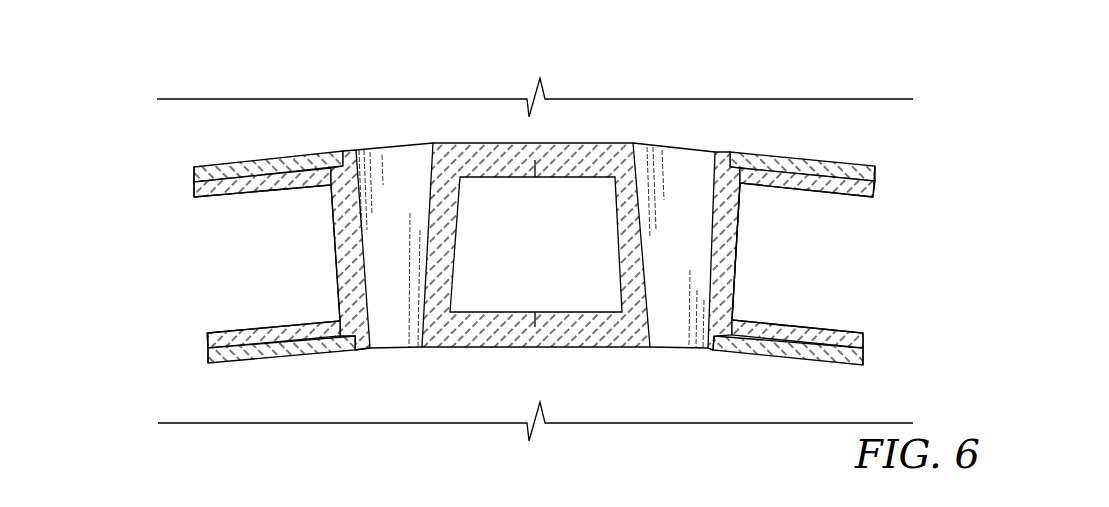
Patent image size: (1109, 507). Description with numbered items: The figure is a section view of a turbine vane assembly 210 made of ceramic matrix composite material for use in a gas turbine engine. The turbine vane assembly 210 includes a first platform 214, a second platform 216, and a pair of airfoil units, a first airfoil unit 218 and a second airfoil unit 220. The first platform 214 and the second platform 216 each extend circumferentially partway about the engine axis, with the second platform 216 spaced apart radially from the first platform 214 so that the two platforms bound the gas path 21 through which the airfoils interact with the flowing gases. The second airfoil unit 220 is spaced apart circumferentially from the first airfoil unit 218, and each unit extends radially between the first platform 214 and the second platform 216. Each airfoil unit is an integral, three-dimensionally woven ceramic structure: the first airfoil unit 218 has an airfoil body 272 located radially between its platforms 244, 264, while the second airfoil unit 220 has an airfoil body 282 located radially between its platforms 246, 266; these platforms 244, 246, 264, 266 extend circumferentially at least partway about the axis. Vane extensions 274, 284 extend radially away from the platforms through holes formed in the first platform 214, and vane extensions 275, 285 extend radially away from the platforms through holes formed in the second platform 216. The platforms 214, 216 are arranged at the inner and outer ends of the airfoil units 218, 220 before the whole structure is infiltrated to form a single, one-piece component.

The turbine vane assembly 210 is at (233, 72).
The first platform 214 is at (263, 137).
The second platform 216 is at (257, 372).
The first airfoil unit 218 is at (957, 207).
The second airfoil unit 220 is at (103, 240).
The gas path 21 is at (848, 293).
The platform 244 is at (818, 190).
The platform 246 is at (232, 198).
The platform 264 is at (837, 326).
The platform 266 is at (242, 328).
The airfoil body 272 is at (798, 252).
The airfoil body 282 is at (292, 253).
The vane extension 274 is at (740, 152).
The vane extension 284 is at (327, 150).
The vane extension 275 is at (723, 337).
The vane extension 285 is at (347, 343).